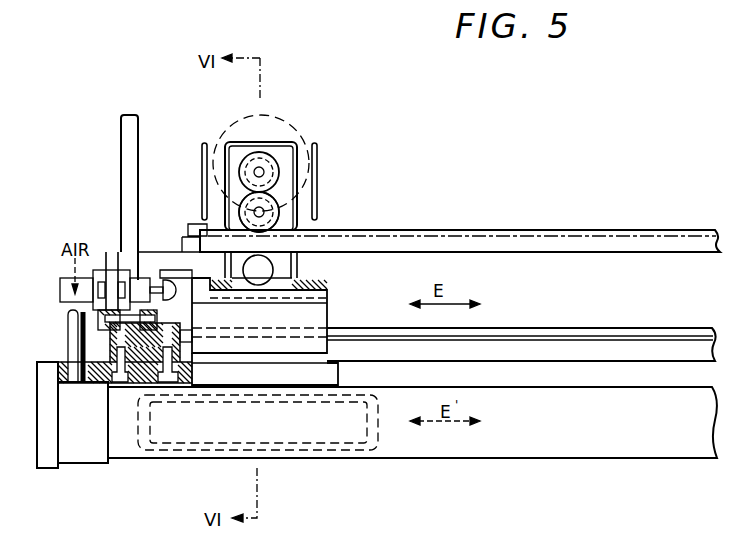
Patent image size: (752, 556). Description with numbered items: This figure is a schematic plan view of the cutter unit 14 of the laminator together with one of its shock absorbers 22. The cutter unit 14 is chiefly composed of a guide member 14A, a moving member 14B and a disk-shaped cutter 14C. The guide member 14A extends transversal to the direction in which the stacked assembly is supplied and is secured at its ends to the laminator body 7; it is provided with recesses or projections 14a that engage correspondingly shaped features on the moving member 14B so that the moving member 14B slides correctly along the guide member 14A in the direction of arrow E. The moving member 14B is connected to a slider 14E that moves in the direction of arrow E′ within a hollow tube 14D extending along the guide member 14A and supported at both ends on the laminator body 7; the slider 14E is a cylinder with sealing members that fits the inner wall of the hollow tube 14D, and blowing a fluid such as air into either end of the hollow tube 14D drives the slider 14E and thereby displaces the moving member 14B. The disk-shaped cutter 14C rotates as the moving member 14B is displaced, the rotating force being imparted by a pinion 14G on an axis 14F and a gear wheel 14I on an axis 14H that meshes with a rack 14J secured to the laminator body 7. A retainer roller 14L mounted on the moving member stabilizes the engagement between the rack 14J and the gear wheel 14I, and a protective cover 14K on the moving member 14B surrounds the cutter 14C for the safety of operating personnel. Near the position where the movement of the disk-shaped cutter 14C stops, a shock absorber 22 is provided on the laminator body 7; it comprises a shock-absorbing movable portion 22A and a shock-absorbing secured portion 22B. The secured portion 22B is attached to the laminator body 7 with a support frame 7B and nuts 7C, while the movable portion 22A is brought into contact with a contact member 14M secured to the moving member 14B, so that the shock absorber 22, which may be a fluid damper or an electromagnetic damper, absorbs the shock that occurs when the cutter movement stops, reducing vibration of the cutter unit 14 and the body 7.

The laminator body 7 is at (121, 138).
The support frame 7B is at (112, 252).
The nuts 7C is at (120, 332).
The cutter unit 14 is at (324, 61).
The guide member 14A is at (553, 348).
The recesses (or projections) 14a is at (623, 337).
The moving member 14B is at (317, 320).
The disk-shaped cutter 14C is at (303, 133).
The hollow tube 14D is at (557, 447).
The slider 14E is at (200, 446).
The axis 14F is at (260, 172).
The pinion 14G is at (245, 150).
The axis 14H is at (260, 212).
The gear wheel 14I is at (240, 212).
The rack 14J is at (505, 238).
The protective cover 14K is at (202, 186).
The retainer roller 14L is at (268, 270).
The contact member 14M is at (327, 286).
The shock absorber 22 is at (50, 274).
The shock-absorbing movable portion 22A is at (172, 278).
The shock-absorbing secured portion 22B is at (60, 297).